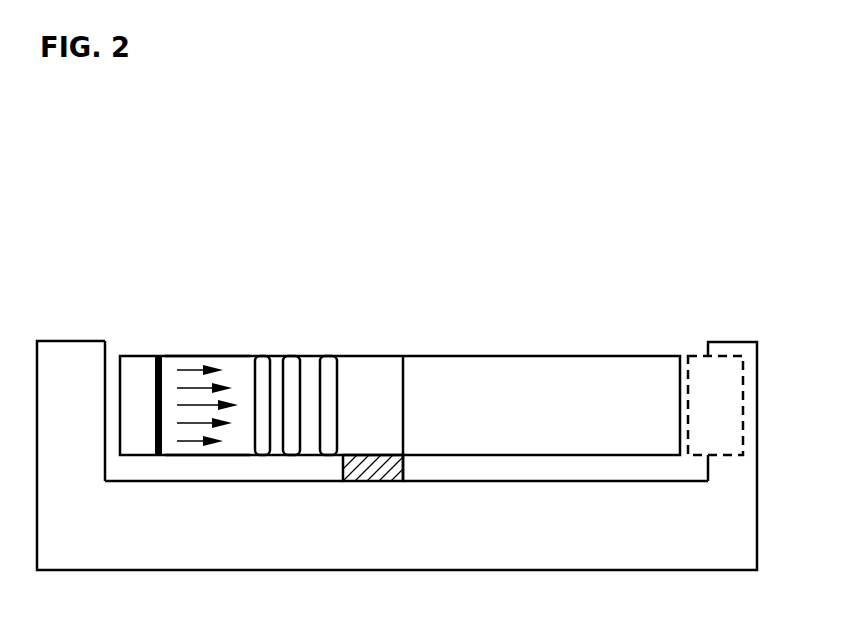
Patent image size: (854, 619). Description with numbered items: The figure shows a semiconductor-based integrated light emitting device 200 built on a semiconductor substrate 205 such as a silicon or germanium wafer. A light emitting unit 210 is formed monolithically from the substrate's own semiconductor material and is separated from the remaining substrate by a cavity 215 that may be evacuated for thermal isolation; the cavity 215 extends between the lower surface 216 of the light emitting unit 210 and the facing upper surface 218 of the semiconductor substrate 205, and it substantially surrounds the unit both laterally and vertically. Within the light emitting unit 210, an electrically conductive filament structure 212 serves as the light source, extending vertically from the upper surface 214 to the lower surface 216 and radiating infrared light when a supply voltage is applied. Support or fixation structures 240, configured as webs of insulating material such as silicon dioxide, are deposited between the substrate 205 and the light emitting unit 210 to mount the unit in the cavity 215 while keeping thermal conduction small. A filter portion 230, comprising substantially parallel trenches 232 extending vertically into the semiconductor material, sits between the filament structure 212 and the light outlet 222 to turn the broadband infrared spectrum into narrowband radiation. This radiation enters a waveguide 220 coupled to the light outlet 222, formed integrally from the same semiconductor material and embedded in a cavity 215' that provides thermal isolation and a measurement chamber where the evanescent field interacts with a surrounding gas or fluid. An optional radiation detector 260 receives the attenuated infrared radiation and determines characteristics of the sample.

The integrated light emitting device 200 is at (663, 128).
The semiconductor substrate 205 is at (472, 537).
The light emitting unit 210 is at (405, 212).
The electrically conductive filament structure 212 is at (160, 357).
The upper surface 214 is at (185, 339).
The cavity 215 is at (189, 451).
The cavity 215' is at (555, 509).
The lower surface 216 is at (187, 472).
The upper surface 218 is at (312, 481).
The waveguide 220 is at (550, 367).
The light outlet 222 is at (416, 327).
The filter portion 230 is at (258, 304).
The trenches 232 is at (290, 357).
The support or fixation structures 240 is at (383, 480).
The radiation detector 260 is at (702, 396).